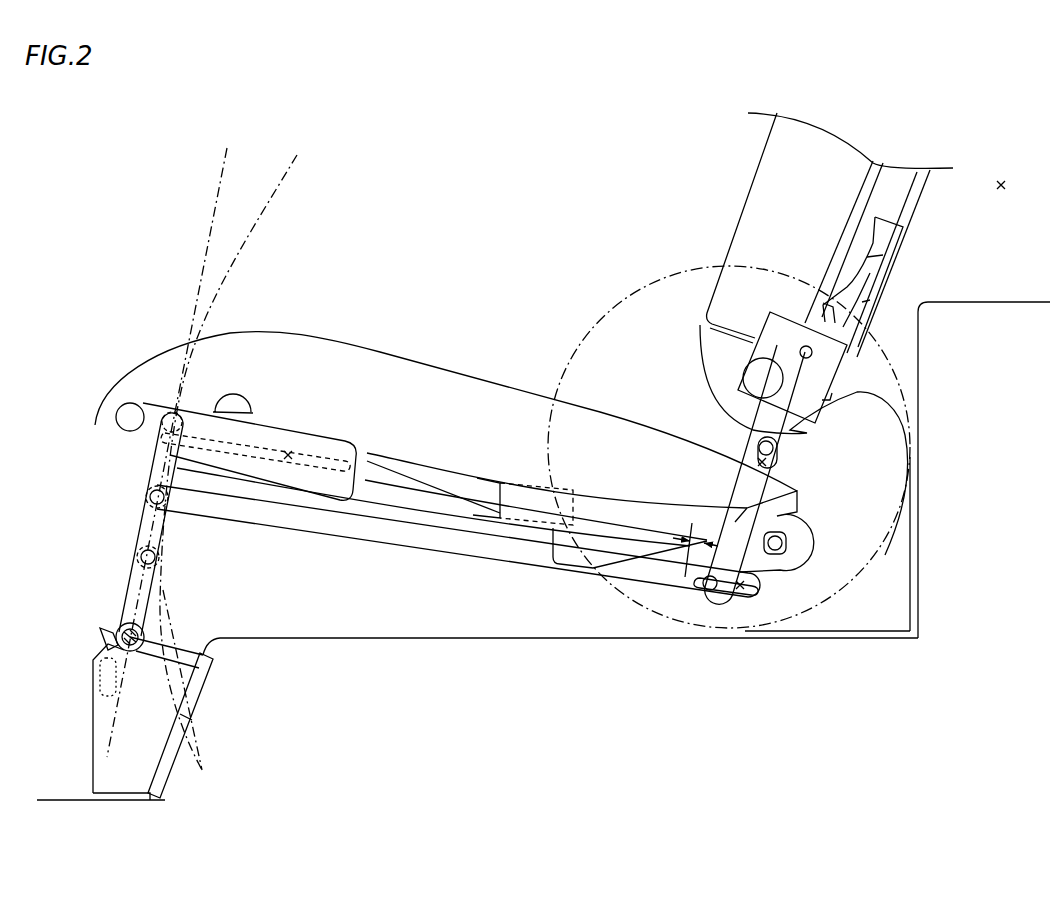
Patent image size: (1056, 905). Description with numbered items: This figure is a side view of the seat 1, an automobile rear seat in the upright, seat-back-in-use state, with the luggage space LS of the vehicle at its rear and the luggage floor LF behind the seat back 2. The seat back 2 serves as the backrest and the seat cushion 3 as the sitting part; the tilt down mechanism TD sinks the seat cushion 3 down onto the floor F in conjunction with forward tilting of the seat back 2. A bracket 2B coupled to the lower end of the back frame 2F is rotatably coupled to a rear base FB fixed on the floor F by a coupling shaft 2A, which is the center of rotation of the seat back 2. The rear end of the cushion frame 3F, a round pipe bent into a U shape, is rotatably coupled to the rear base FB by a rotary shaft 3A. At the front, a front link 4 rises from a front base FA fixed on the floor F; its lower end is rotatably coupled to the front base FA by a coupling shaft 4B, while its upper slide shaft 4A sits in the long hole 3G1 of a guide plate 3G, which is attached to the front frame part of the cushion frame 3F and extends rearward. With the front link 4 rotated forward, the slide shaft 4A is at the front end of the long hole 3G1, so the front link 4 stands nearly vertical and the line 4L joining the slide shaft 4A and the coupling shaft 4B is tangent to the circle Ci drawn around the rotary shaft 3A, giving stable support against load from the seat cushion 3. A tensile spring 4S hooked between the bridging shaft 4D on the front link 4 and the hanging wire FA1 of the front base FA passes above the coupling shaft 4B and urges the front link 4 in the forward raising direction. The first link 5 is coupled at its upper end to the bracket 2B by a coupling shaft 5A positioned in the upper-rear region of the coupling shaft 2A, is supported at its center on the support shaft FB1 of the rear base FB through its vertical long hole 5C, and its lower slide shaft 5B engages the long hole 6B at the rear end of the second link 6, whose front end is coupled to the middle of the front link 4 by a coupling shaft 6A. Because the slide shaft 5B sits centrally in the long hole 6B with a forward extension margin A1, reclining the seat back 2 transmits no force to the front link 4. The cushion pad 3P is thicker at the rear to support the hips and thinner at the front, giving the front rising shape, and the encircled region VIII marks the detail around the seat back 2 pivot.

The seat 1 is at (510, 156).
The seat back 2 is at (758, 158).
The coupling shaft 2A is at (764, 380).
The bracket 2B is at (830, 353).
The back frame 2F is at (906, 197).
The seat cushion 3 is at (397, 353).
The rotary shaft 3A is at (785, 543).
The cushion frame 3F is at (457, 474).
The guide plate 3G is at (322, 492).
The long hole 3G1 is at (288, 462).
The cushion pad 3P is at (357, 340).
The front link 4 is at (139, 530).
The slide shaft 4A is at (165, 410).
The coupling shaft 4B is at (145, 640).
The bridging shaft 4D is at (141, 557).
The line 4L is at (224, 172).
The tensile spring 4S is at (113, 633).
The first link 5 is at (731, 496).
The coupling shaft 5A is at (805, 347).
The slide shaft 5B is at (711, 591).
The long hole 5C is at (770, 464).
The second link 6 is at (490, 568).
The coupling shaft 6A is at (150, 497).
The long hole 6B is at (737, 597).
The forward extension margin A1 is at (696, 545).
The circle Ci is at (281, 182).
The floor F is at (452, 640).
The front base FA is at (104, 729).
The hanging wire FA1 is at (95, 660).
The rear base FB is at (897, 547).
The support shaft FB1 is at (778, 450).
The luggage floor LF is at (1023, 300).
The luggage space LS is at (1000, 183).
The tilt down mechanism TD is at (309, 591).
The detail view VIII is at (606, 308).